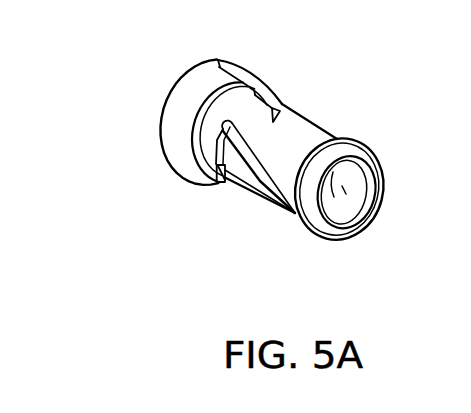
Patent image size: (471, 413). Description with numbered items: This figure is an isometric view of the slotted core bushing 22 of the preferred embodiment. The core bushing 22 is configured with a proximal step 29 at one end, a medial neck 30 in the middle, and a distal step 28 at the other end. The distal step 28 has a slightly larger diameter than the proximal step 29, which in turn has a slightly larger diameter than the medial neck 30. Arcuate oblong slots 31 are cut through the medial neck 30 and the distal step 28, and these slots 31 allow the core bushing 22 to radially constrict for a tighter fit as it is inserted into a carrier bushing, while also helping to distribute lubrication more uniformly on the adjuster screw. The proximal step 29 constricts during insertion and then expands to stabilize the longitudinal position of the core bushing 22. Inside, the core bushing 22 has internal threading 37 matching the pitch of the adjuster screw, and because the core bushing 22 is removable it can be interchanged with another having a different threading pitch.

The slotted core bushing 22 is at (120, 75).
The distal step 28 is at (173, 145).
The proximal step 29 is at (346, 139).
The medial neck 30 is at (303, 123).
The arcuate oblong slots 31 is at (233, 181).
The internal threading 37 is at (347, 192).